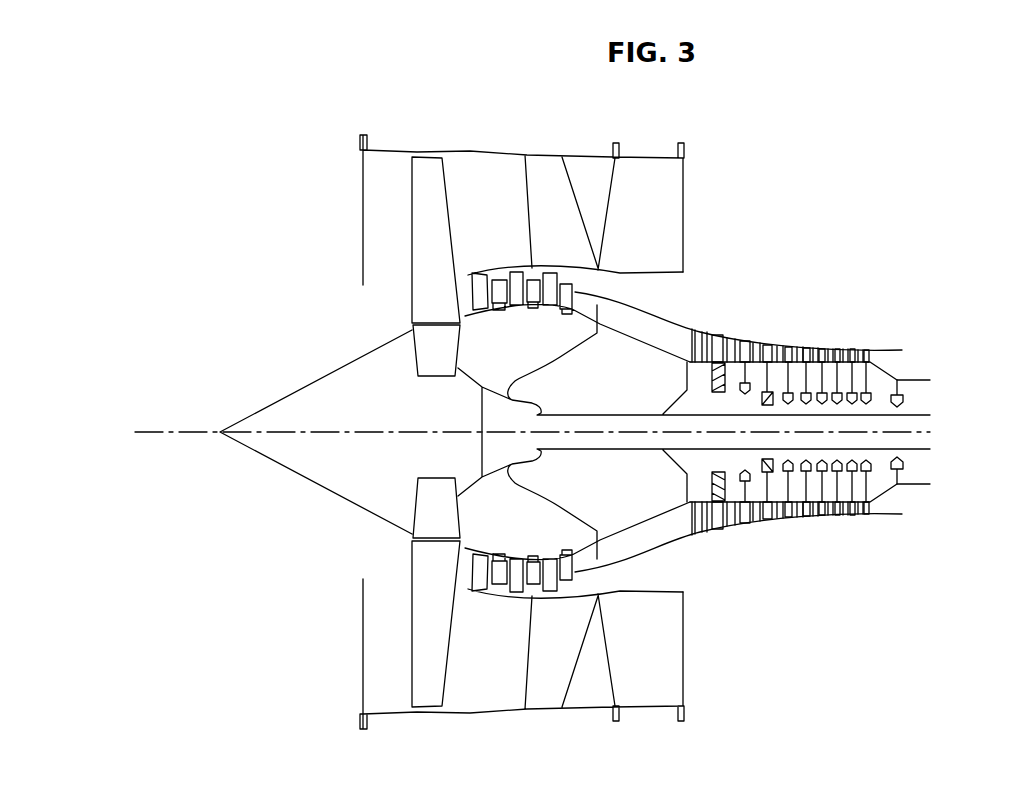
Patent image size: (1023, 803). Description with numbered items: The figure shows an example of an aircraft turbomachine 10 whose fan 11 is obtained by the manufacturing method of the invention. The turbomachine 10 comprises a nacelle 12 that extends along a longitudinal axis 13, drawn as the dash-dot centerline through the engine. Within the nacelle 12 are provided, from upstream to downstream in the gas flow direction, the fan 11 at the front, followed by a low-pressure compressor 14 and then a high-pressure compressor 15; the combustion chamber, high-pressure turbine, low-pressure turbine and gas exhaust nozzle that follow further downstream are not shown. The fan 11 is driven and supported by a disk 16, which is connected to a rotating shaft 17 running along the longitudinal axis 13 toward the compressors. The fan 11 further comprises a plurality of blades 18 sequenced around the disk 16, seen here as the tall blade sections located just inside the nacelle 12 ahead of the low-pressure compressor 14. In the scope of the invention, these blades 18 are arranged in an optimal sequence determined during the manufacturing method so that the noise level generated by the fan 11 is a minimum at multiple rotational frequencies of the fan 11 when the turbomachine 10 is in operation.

The aircraft turbomachine 10 is at (770, 291).
The fan 11 is at (428, 143).
The nacelle 12 is at (478, 150).
The longitudinal axis 13 is at (154, 428).
The low-pressure compressor 14 is at (577, 300).
The high-pressure compressor 15 is at (803, 346).
The disk 16 is at (411, 352).
The rotating shaft 17 is at (653, 408).
The blades 18 is at (434, 226).